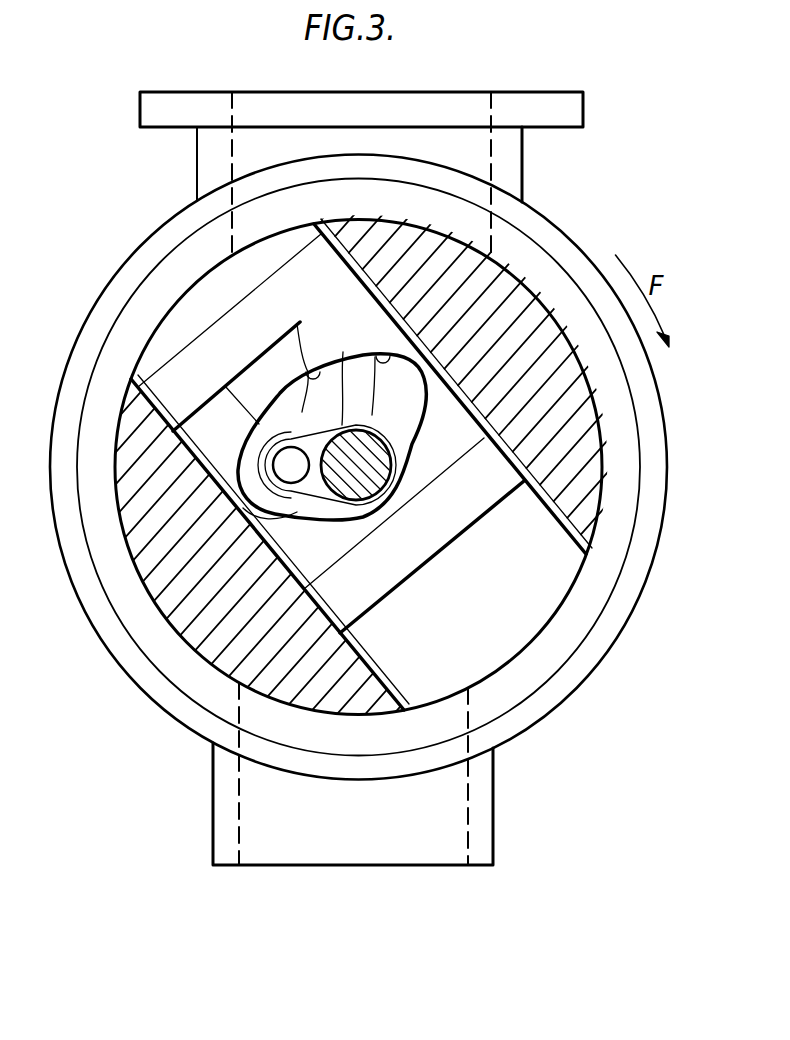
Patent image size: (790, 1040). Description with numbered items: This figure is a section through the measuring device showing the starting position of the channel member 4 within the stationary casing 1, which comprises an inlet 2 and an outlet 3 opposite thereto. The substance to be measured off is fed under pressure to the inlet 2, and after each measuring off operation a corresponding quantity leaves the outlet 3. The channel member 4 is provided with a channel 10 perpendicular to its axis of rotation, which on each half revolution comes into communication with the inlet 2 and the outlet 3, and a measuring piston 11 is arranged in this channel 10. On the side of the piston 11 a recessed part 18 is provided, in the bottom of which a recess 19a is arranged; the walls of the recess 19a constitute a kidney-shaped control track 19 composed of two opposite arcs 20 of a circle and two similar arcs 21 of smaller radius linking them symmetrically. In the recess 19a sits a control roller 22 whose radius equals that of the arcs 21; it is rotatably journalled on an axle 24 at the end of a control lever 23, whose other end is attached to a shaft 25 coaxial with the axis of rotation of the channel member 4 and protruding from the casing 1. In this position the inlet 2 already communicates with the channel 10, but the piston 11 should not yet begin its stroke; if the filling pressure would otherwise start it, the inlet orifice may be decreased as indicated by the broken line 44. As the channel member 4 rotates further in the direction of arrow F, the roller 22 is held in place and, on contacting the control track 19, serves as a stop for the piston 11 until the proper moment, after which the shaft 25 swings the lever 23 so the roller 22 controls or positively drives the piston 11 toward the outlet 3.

The stationary casing 1 is at (617, 604).
The inlet 2 is at (514, 118).
The outlet 3 is at (218, 843).
The channel member 4 is at (157, 553).
The channel 10 is at (538, 628).
The measuring piston 11 is at (437, 528).
The recessed part 18 is at (345, 535).
The control track 19 is at (236, 368).
The recess 19a is at (218, 396).
The arcs of a circle 20 is at (275, 358).
The arcs of a circle of smaller radius 21 is at (382, 353).
The control roller 22 is at (283, 421).
The control lever 23 is at (345, 354).
The axle 24 is at (284, 458).
The shaft 25 is at (385, 465).
The broken line 44 is at (325, 237).